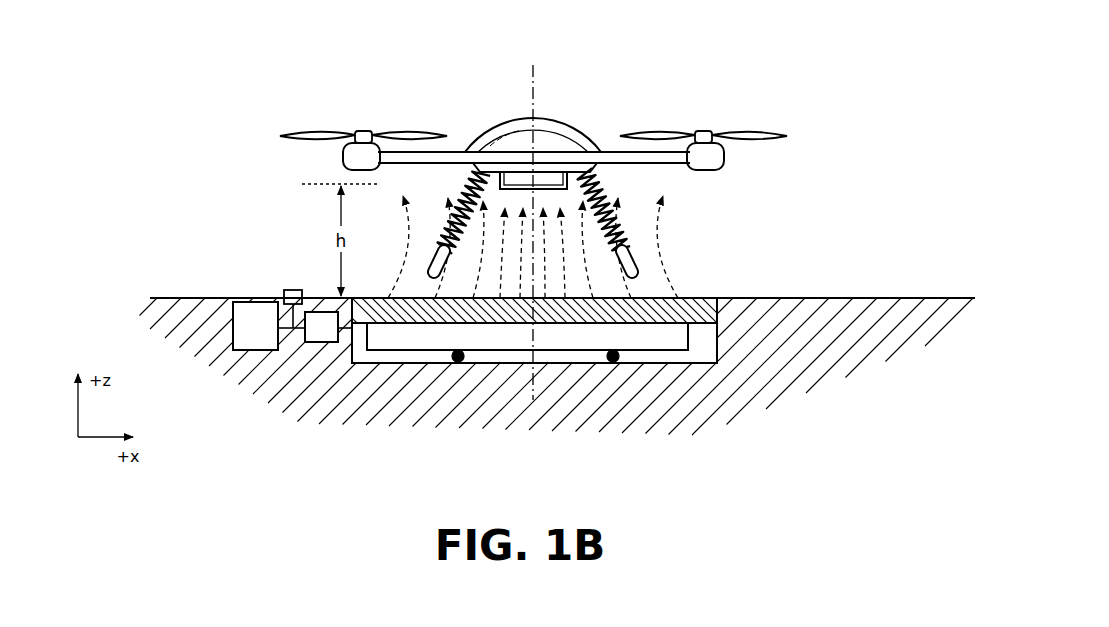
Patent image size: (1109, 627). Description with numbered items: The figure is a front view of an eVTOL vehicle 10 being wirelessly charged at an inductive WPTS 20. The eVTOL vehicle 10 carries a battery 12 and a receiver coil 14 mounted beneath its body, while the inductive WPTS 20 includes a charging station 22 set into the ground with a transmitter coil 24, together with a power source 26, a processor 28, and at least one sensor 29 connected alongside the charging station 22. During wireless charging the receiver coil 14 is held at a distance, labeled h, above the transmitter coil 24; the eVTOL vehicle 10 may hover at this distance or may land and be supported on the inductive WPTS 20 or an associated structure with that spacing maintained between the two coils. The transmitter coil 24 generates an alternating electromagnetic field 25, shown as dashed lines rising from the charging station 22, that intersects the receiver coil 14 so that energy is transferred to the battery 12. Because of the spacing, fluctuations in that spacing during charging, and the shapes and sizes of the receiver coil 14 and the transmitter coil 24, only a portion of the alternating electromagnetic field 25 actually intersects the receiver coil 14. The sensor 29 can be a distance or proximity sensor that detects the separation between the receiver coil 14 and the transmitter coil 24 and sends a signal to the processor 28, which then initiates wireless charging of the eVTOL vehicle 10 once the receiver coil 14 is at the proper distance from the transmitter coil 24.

The eVTOL vehicle 10 is at (533, 157).
The battery 12 is at (552, 168).
The receiver coil 14 is at (509, 185).
The inductive WPTS 20 is at (836, 265).
The charging station 22 is at (893, 405).
The transmitter coil 24 is at (689, 356).
The alternating electromagnetic field 25 is at (698, 234).
The power source 26 is at (244, 350).
The processor 28 is at (310, 342).
The sensor 29 is at (292, 290).